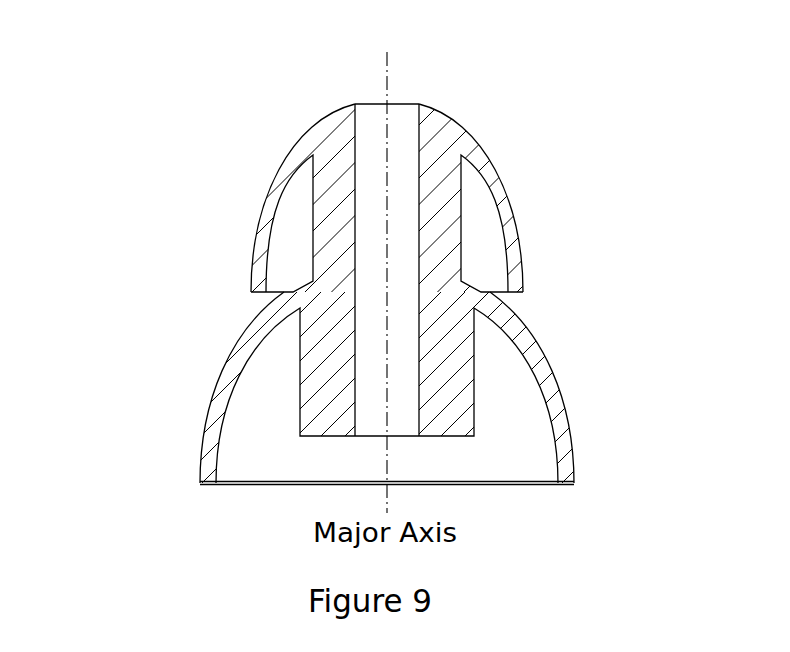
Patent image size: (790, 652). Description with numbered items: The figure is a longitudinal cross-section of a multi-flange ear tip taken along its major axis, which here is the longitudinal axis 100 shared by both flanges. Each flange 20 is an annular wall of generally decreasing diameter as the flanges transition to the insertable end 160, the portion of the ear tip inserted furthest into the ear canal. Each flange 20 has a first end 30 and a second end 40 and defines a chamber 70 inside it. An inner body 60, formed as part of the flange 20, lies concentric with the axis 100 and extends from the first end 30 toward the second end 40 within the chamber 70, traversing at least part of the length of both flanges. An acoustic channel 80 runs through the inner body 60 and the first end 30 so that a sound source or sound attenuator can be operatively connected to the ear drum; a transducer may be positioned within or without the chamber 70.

The longitudinal axis 100 is at (388, 82).
The acoustic channel 80 is at (400, 103).
The insertable end 160 is at (330, 117).
The first end 30 is at (500, 303).
The annular flange 20 is at (505, 193).
The chamber 70 is at (287, 232).
The second end 40 is at (262, 293).
The inner body 60 is at (435, 192).